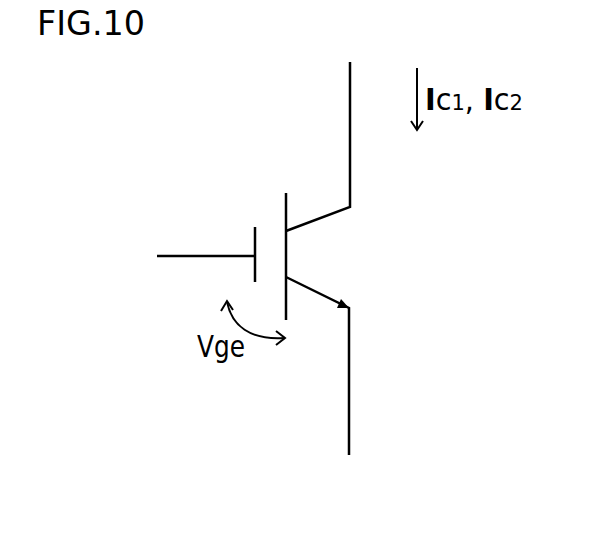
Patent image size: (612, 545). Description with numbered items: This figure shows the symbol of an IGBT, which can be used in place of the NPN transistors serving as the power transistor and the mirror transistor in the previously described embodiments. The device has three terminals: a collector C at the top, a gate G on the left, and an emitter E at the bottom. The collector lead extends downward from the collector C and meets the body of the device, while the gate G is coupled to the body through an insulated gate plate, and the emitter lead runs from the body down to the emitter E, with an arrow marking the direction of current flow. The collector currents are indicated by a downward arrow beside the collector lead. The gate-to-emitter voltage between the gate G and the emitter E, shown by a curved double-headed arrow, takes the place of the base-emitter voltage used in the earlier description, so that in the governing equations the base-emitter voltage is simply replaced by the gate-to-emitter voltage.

The collector C is at (322, 126).
The gate G is at (206, 237).
The emitter E is at (324, 386).